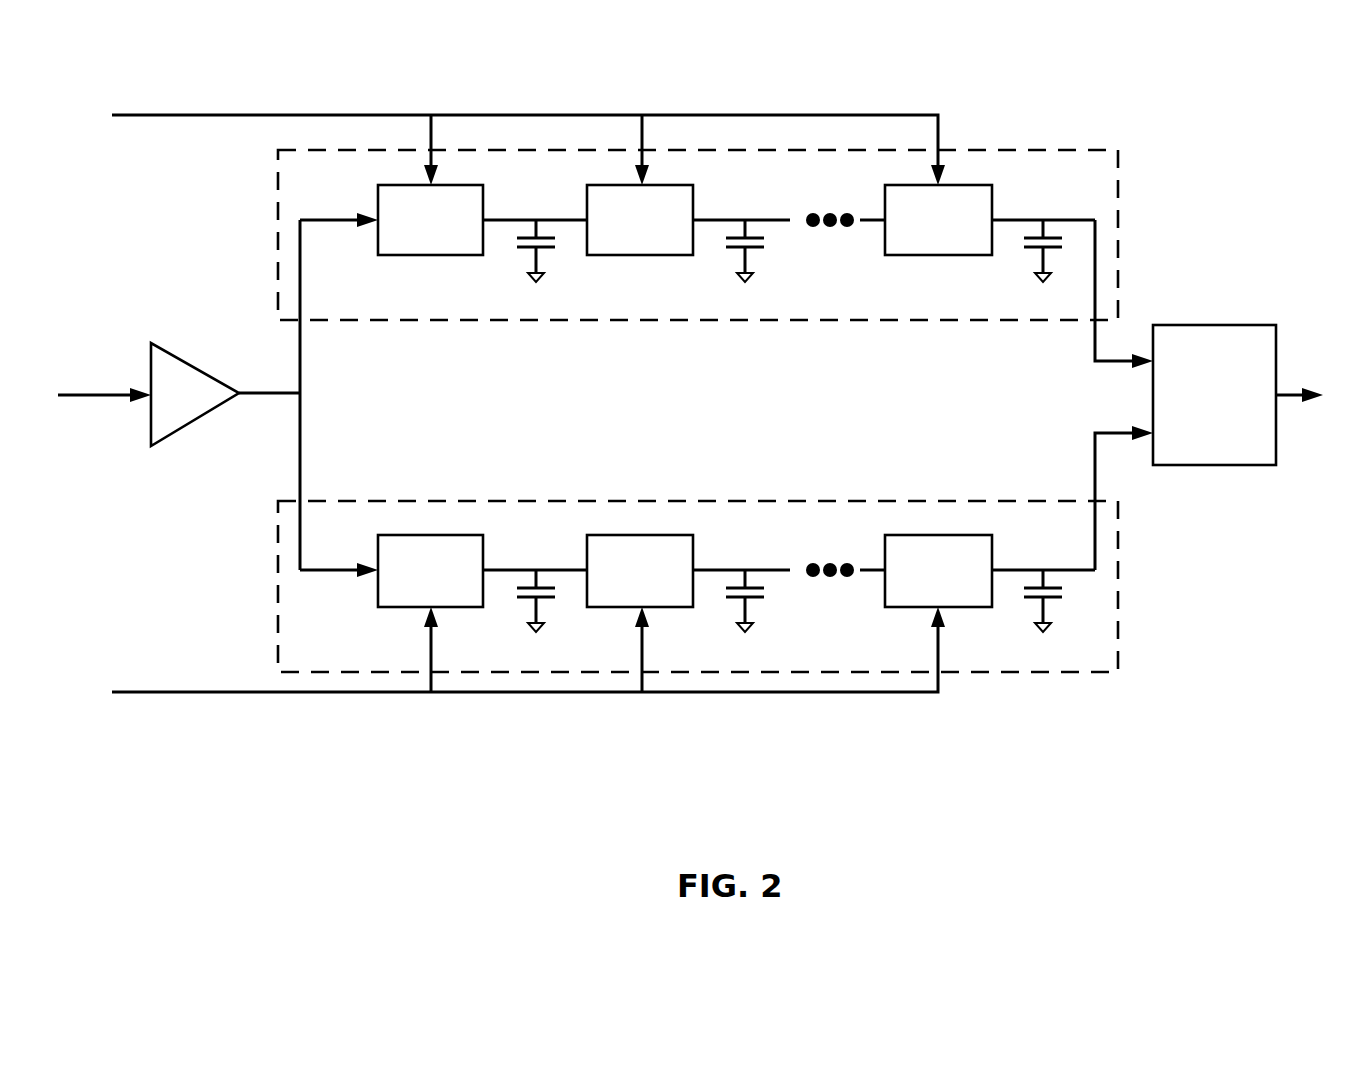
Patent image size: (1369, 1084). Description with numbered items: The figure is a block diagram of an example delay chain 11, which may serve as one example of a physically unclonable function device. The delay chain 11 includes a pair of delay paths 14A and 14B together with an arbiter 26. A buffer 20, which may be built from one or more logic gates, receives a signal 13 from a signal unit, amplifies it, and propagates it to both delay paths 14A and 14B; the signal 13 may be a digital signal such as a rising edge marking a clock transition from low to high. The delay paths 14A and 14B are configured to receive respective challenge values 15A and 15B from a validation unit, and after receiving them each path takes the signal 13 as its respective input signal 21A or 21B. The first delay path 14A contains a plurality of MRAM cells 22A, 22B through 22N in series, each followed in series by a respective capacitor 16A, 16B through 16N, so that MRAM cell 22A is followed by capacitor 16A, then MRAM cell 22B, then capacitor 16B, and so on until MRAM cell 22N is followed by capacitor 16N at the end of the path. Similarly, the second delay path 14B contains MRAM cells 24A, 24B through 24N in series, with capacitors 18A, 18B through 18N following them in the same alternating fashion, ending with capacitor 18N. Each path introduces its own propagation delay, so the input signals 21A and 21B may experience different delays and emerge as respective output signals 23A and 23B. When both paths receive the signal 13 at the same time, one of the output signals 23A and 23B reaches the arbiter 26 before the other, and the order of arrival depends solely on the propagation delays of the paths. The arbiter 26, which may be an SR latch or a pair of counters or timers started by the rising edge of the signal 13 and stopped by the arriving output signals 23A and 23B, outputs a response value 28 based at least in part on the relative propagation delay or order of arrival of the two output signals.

The delay chain 11 is at (1222, 162).
The signal 13 is at (112, 390).
The delay path 14A is at (1100, 150).
The delay path 14B is at (1100, 672).
The challenge value 15A is at (147, 117).
The challenge value 15B is at (142, 690).
The capacitor 16A is at (533, 276).
The capacitor 16B is at (742, 276).
The capacitor 16N is at (1040, 276).
The capacitor 18A is at (533, 626).
The capacitor 18B is at (742, 626).
The capacitor 18N is at (1040, 626).
The buffer 20 is at (152, 344).
The input signal 21A is at (302, 217).
The input signal 21B is at (302, 568).
The MRAM cell 22A is at (451, 247).
The MRAM cell 22B is at (661, 247).
The MRAM cell 22N is at (959, 247).
The output signal 23A is at (1095, 338).
The output signal 23B is at (1095, 450).
The MRAM cell 24A is at (451, 597).
The MRAM cell 24B is at (661, 597).
The MRAM cell 24N is at (959, 597).
The arbiter 26 is at (1203, 422).
The response value 28 is at (1290, 393).